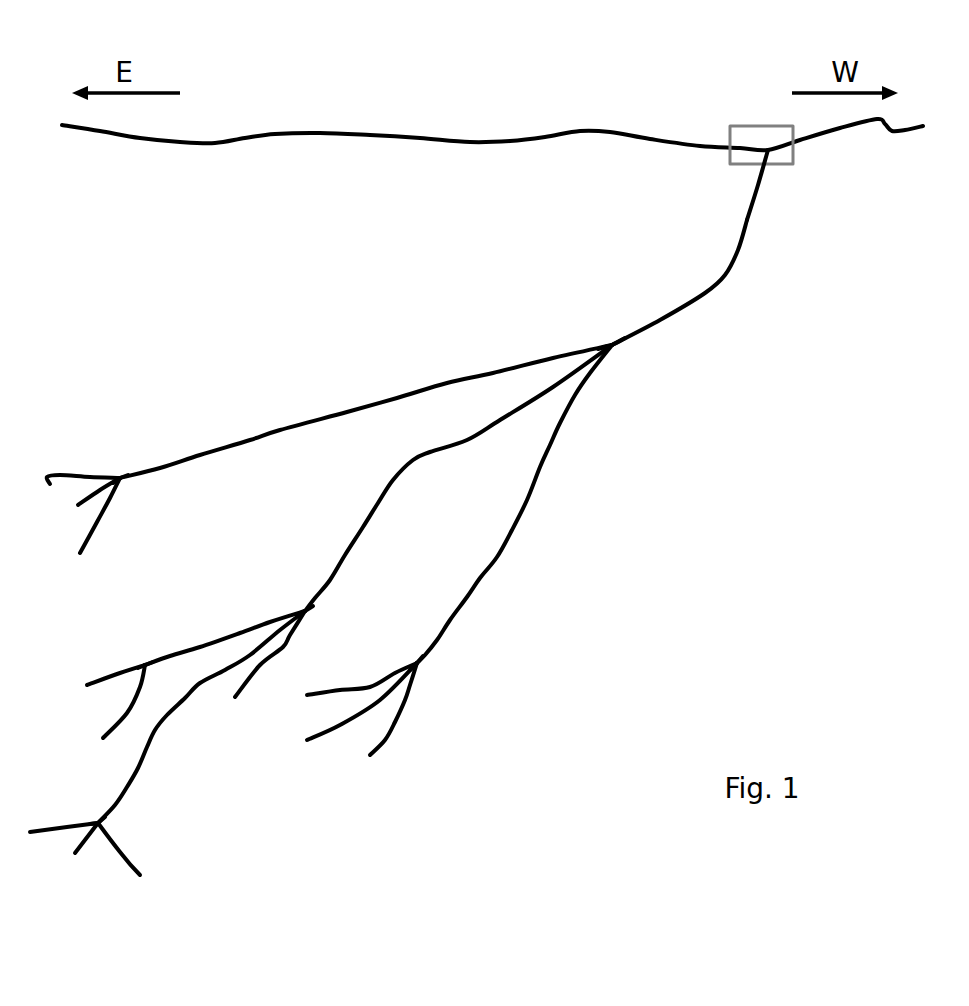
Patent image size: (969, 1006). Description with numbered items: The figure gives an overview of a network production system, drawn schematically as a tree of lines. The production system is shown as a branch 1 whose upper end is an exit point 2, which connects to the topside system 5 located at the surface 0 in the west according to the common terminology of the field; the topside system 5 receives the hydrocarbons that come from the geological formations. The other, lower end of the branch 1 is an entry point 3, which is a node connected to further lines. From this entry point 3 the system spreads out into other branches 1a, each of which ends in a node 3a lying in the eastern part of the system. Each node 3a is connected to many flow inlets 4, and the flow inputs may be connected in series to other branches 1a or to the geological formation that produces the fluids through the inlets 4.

The surface 0 is at (492, 145).
The branch 1 is at (679, 282).
The other branches 1a is at (355, 584).
The exit point 2 is at (770, 185).
The entry point 3 is at (606, 329).
The node 3a is at (259, 635).
The flow inlets 4 is at (218, 678).
The topside system 5 is at (775, 136).